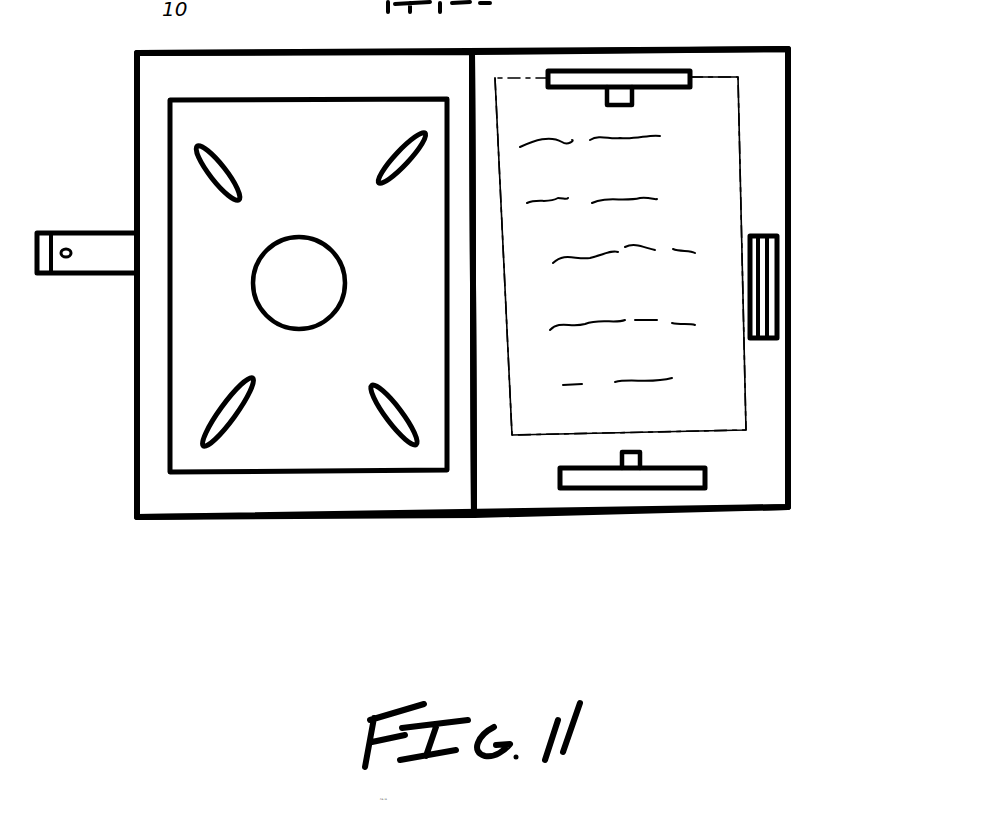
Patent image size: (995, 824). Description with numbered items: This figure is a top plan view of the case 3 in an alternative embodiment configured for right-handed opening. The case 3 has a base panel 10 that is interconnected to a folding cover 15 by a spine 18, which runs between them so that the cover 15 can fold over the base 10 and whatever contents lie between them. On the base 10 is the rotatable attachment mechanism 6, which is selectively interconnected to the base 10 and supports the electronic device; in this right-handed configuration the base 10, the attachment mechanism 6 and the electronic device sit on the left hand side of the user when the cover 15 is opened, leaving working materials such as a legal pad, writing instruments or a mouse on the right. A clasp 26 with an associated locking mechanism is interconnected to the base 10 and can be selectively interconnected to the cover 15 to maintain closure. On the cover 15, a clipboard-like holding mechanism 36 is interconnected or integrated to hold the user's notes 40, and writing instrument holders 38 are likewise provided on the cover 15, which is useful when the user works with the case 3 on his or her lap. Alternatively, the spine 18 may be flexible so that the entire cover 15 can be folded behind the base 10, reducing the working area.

The case 3 is at (822, 110).
The rotatable attachment mechanism 6 is at (338, 442).
The base panel 10 is at (263, 497).
The folding cover 15 is at (743, 472).
The spine 18 is at (475, 517).
The clasp 26 is at (97, 258).
The holding mechanism 36 is at (688, 73).
The writing instrument holders 38 is at (770, 300).
The notes 40 is at (708, 183).